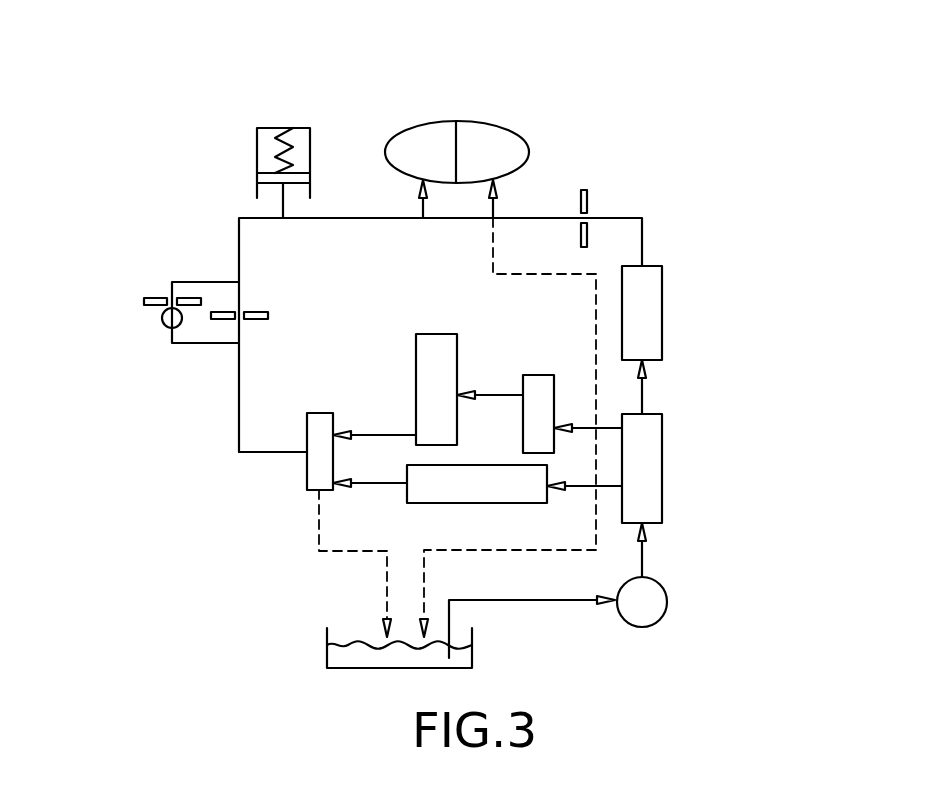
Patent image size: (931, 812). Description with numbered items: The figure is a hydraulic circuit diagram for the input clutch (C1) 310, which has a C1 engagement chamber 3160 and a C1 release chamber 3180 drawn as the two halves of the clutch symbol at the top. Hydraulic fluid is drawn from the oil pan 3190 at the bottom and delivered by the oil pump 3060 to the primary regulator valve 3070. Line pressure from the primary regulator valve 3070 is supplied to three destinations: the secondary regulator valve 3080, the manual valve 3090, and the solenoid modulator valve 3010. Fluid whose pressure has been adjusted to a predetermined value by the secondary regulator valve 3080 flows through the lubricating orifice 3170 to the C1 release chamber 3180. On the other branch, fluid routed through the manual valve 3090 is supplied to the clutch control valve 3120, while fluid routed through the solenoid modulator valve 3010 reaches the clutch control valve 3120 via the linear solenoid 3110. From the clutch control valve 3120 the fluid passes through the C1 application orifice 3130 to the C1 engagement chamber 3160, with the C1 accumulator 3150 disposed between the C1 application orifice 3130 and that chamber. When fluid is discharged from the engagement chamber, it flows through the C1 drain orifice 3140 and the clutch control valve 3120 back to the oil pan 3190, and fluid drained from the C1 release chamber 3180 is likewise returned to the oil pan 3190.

The input clutch (C1) 310 is at (533, 76).
The C1 engagement chamber 3160 is at (410, 140).
The C1 release chamber 3180 is at (500, 140).
The C1 accumulator 3150 is at (257, 150).
The C1 drain orifice 3140 is at (158, 300).
The C1 application orifice 3130 is at (262, 309).
The lubricating orifice 3170 is at (590, 201).
The secondary regulator valve 3080 is at (662, 313).
The primary regulator valve 3070 is at (662, 468).
The solenoid modulator valve 3010 is at (540, 375).
The linear solenoid 3110 is at (437, 334).
The clutch control valve 3120 is at (318, 420).
The manual valve 3090 is at (480, 500).
The oil pump 3060 is at (655, 598).
The oil pan 3190 is at (327, 650).